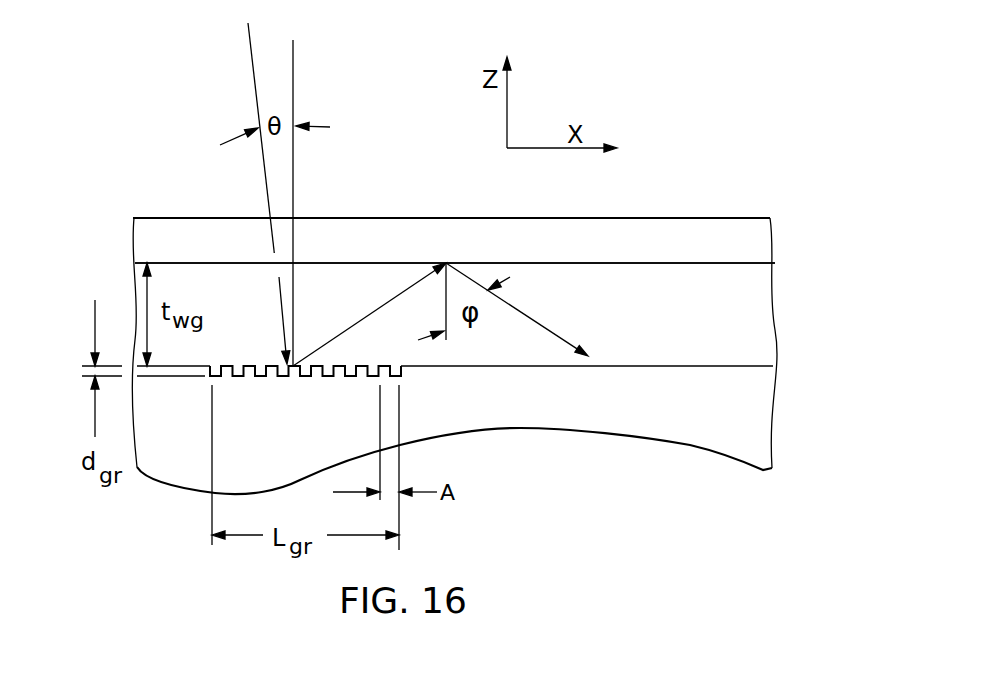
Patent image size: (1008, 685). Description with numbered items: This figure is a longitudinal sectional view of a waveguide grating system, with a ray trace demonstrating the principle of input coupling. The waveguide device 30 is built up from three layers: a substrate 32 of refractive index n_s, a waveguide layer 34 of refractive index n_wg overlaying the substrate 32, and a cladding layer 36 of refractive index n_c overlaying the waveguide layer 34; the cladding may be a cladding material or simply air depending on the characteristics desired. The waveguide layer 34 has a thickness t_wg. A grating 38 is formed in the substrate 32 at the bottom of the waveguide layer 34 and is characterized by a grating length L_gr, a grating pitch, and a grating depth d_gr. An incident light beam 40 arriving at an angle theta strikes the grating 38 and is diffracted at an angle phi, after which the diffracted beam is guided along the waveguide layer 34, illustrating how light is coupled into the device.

The waveguide device 30 is at (719, 204).
The substrate 32 is at (770, 420).
The waveguide layer 34 is at (760, 325).
The cladding layer 36 is at (758, 240).
The grating 38 is at (250, 362).
The incident light beam 40 is at (253, 63).